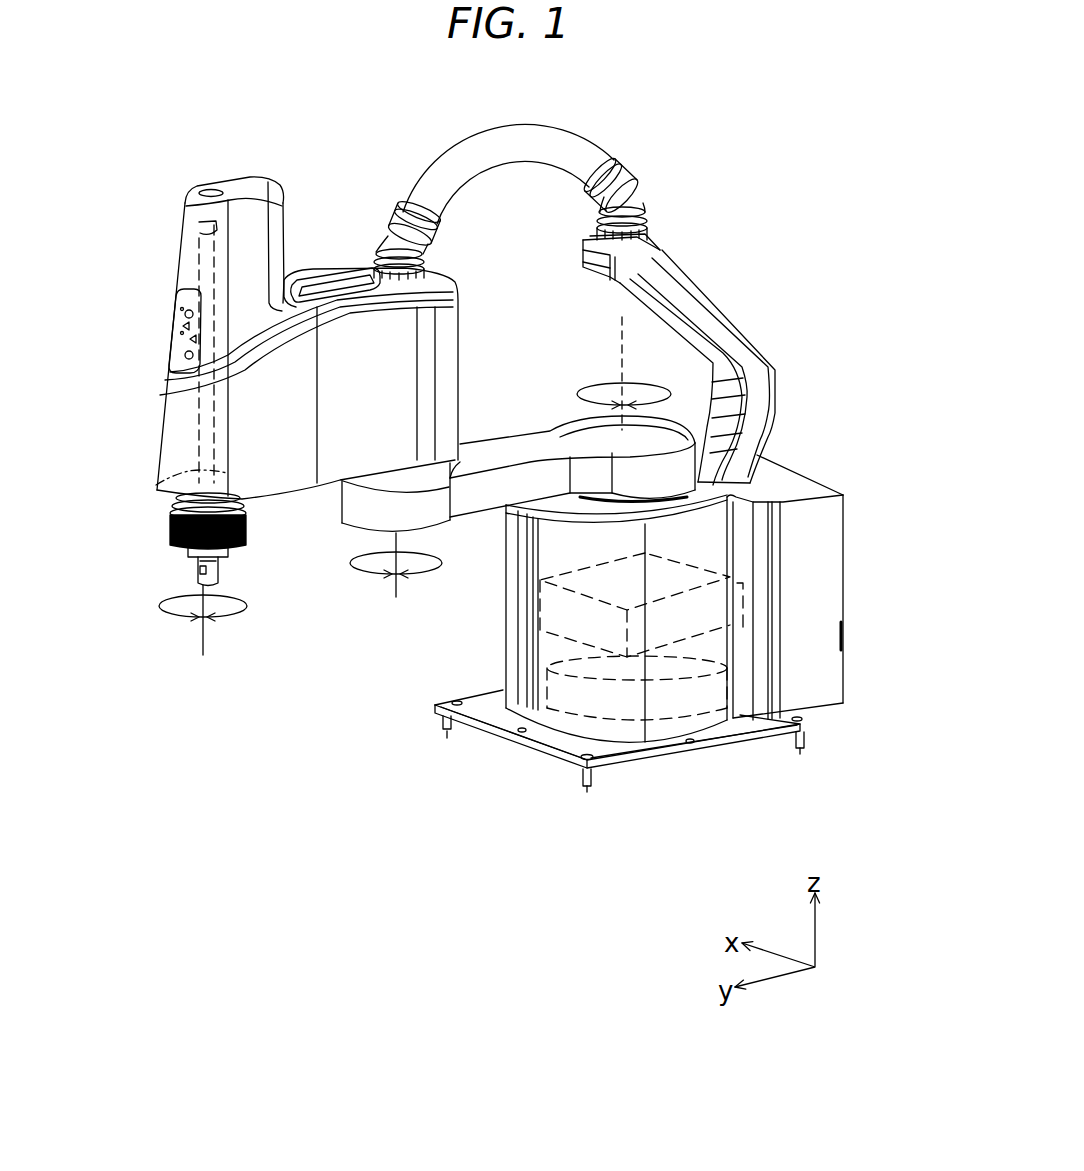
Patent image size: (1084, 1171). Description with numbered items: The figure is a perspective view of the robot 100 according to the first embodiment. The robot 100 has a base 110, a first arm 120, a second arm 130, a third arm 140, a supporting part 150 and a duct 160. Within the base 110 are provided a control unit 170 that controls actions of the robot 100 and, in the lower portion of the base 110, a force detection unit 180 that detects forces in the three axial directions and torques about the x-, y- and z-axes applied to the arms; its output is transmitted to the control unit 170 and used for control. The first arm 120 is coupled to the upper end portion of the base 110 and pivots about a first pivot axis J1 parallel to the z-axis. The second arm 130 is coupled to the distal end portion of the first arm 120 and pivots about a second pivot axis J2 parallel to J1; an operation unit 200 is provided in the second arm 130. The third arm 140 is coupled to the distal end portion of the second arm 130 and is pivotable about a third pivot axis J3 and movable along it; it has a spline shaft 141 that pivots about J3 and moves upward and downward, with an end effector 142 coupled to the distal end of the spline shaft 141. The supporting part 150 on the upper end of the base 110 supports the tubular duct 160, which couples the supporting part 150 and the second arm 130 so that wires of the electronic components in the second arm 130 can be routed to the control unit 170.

The robot 100 is at (720, 173).
The base 110 is at (826, 528).
The first arm 120 is at (360, 508).
The second arm 130 is at (167, 405).
The third arm 140 is at (188, 460).
The spline shaft 141 is at (163, 490).
The end effector 142 is at (200, 567).
The supporting part 150 is at (757, 408).
The duct 160 is at (497, 150).
The control unit 170 is at (744, 618).
The force detection unit 180 is at (733, 703).
The operation unit 200 is at (176, 302).
The first pivot axis J1 is at (622, 373).
The second pivot axis J2 is at (395, 582).
The third pivot axis J3 is at (203, 630).